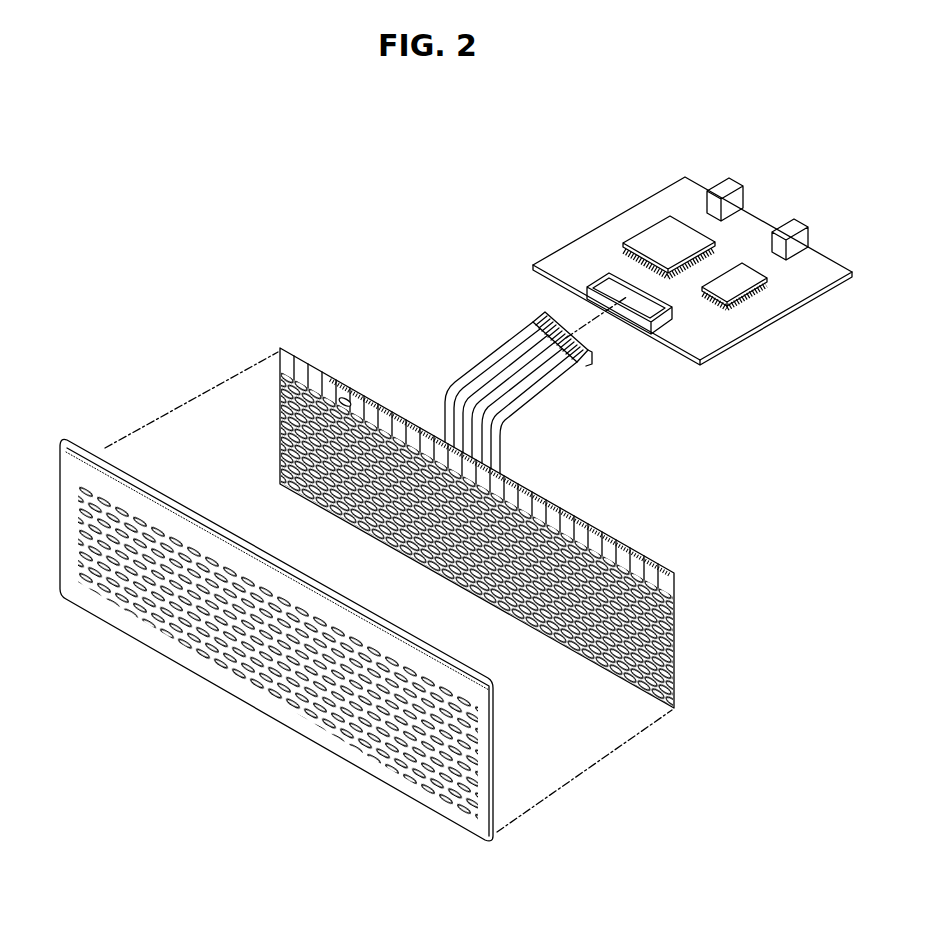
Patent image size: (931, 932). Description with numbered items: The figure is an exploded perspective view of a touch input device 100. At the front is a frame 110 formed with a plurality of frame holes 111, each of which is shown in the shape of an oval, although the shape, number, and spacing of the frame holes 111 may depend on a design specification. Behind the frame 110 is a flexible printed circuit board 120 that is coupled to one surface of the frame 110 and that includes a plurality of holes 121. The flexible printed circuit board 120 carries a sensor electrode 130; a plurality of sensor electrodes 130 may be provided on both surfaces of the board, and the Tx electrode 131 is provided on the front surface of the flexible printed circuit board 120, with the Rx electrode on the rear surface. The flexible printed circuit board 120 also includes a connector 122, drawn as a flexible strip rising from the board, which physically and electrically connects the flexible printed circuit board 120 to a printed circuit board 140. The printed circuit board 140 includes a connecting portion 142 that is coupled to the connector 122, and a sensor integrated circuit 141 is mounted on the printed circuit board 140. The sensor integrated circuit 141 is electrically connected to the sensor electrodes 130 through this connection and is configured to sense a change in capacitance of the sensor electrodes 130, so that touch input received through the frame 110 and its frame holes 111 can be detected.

The touch input device 100 is at (234, 257).
The frame 110 is at (60, 434).
The frame holes 111 is at (84, 490).
The flexible printed circuit board 120 is at (291, 343).
The holes 121 is at (280, 395).
The sensor electrode 130 is at (477, 539).
The Tx electrode 131 is at (346, 396).
The connector 122 is at (590, 362).
The printed circuit board 140 is at (572, 221).
The sensor integrated circuit 141 is at (651, 235).
The connecting portion 142 is at (667, 318).